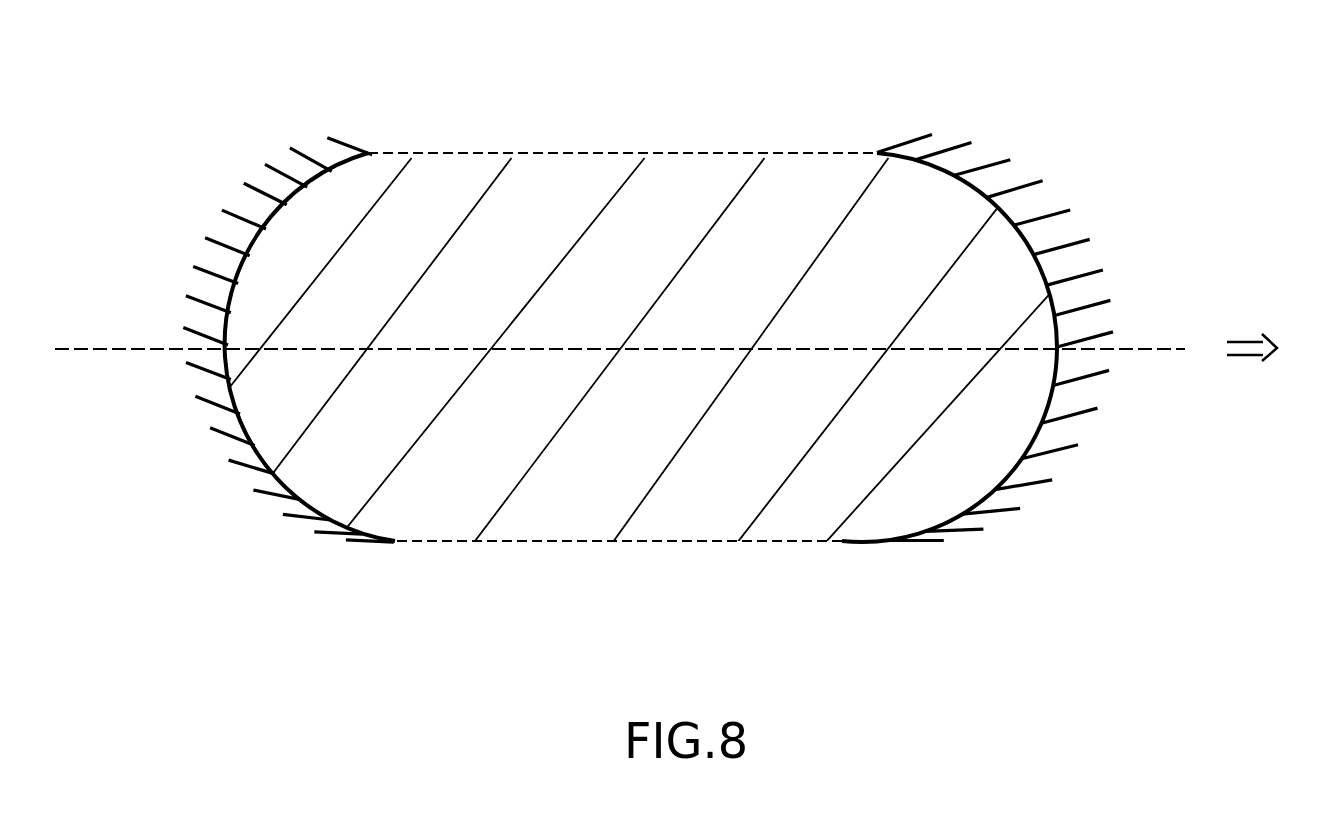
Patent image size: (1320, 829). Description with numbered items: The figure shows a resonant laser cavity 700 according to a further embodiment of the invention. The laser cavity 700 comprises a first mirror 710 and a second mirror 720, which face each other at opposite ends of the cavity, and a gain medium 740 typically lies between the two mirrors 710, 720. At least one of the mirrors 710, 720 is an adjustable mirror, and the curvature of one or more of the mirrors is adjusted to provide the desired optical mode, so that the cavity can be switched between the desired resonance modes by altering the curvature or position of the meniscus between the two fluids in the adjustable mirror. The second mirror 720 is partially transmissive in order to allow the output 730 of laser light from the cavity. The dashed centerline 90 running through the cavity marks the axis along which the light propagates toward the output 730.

The laser cavity 700 is at (1010, 574).
The first mirror 710 is at (313, 133).
The second mirror 720 is at (980, 163).
The output 730 is at (1207, 349).
The gain medium 740 is at (597, 173).
The optical axis 90 is at (93, 351).